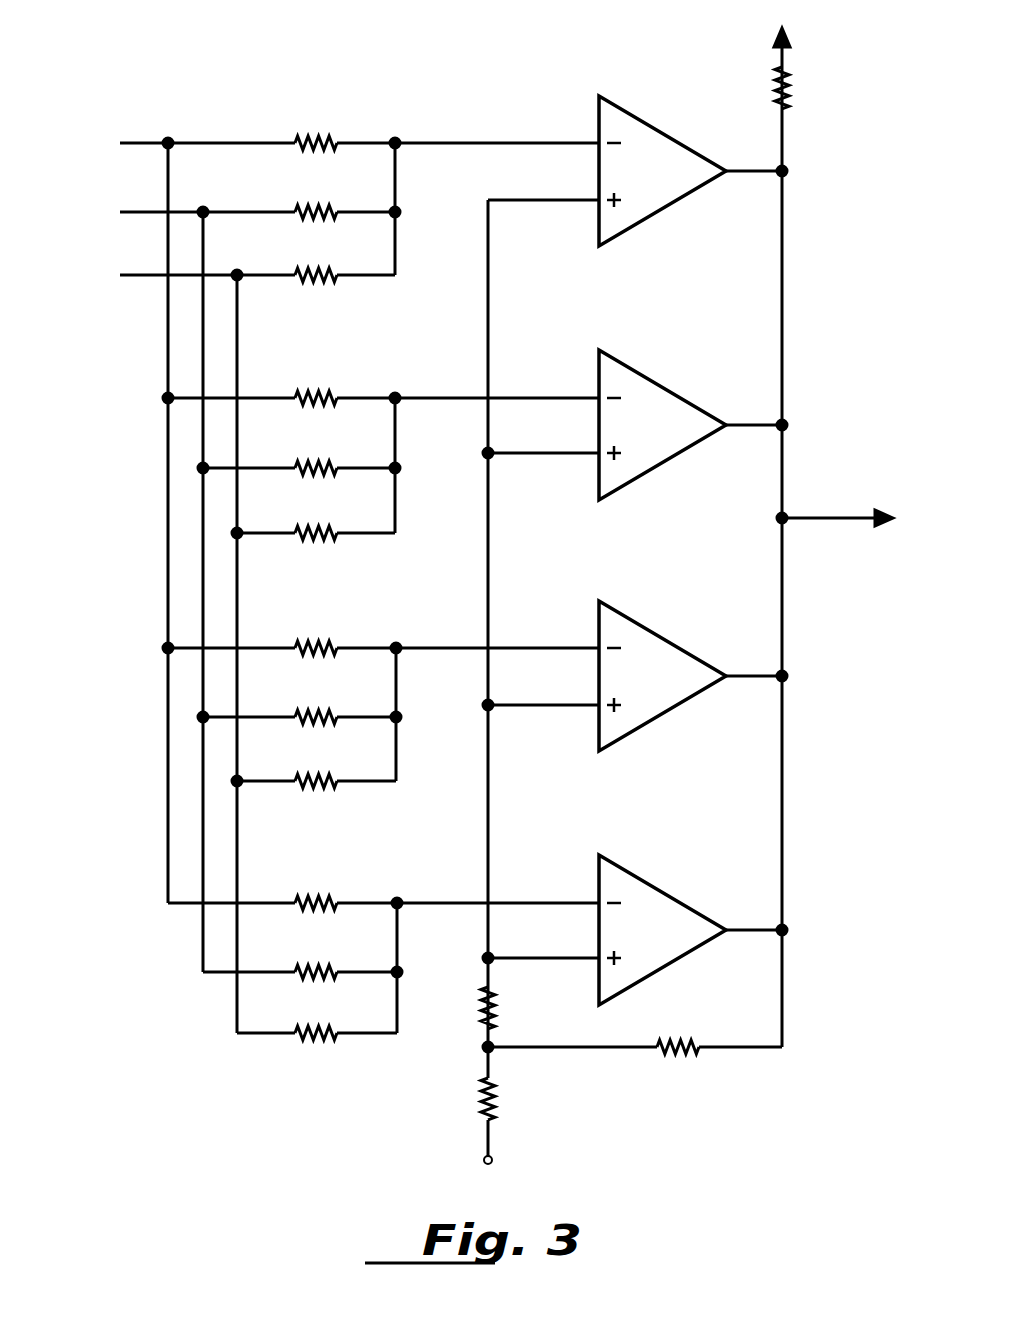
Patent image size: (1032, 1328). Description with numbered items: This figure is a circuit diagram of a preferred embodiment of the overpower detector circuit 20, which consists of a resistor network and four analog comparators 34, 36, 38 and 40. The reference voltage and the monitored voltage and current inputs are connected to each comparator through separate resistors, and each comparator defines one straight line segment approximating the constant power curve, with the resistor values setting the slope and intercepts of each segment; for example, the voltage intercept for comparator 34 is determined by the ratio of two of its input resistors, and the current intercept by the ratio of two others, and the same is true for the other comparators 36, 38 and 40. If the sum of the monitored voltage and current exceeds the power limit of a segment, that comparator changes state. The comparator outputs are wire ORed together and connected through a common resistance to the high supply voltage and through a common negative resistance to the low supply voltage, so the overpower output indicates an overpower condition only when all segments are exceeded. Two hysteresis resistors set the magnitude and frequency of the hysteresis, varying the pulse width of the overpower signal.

The overpower detector circuit 20 is at (478, 600).
The comparator 34 is at (660, 152).
The comparator 36 is at (660, 406).
The comparator 38 is at (660, 657).
The comparator 40 is at (660, 911).